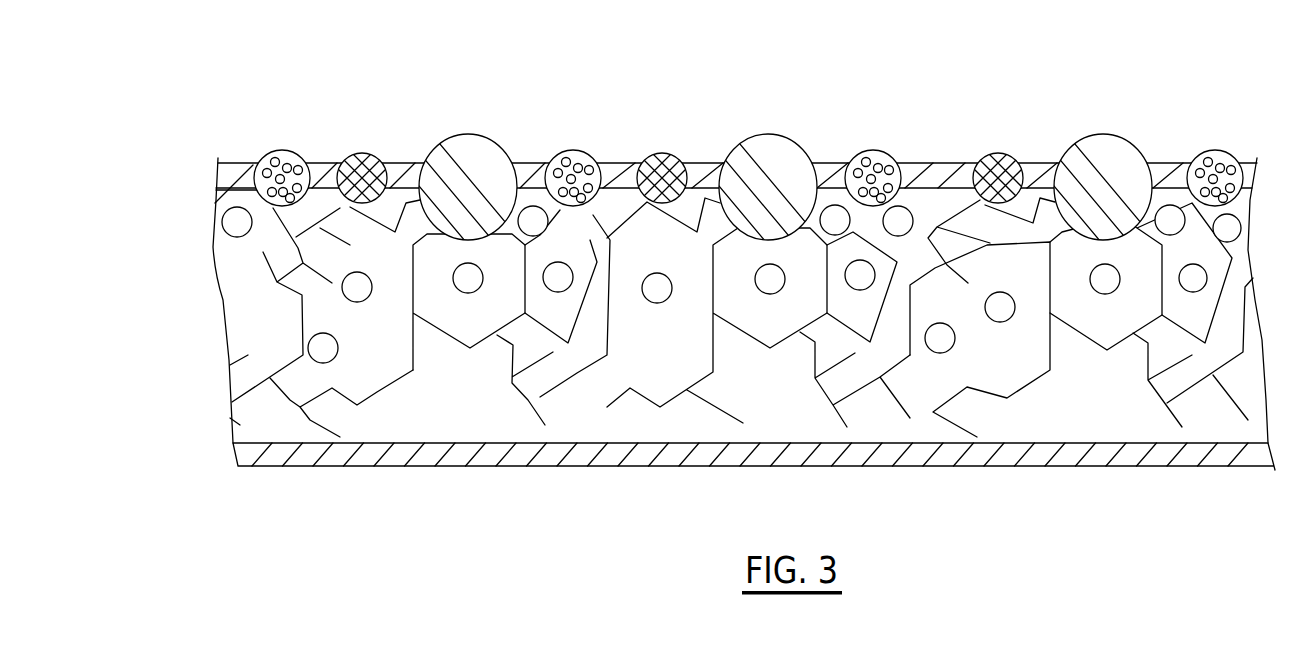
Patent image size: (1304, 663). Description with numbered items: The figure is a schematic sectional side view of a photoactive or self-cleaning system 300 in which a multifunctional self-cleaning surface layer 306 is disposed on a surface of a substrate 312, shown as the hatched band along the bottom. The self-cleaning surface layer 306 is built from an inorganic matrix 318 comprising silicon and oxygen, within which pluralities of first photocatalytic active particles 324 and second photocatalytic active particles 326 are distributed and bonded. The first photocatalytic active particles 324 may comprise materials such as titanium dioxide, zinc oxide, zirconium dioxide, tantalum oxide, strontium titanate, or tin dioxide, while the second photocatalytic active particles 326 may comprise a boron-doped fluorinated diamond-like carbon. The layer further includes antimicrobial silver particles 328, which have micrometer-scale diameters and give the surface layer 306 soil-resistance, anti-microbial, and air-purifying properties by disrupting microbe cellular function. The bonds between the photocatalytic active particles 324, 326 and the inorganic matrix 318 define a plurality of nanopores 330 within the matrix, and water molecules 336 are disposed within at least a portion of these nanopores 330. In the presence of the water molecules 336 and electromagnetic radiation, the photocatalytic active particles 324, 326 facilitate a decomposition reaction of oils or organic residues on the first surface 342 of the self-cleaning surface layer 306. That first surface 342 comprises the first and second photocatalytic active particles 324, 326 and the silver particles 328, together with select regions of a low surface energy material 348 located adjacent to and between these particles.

The photoactive system 300 is at (275, 93).
The multifunctional self-cleaning surface layer 306 is at (203, 359).
The substrate 312 is at (1008, 467).
The inorganic matrix 318 is at (248, 302).
The first photocatalytic active particles 324 is at (790, 133).
The second photocatalytic active particles 326 is at (997, 152).
The silver particles 328 is at (572, 152).
The nanopores 330 is at (563, 310).
The water molecules 336 is at (466, 305).
The first surface 342 is at (1166, 181).
The low surface energy material 348 is at (395, 165).